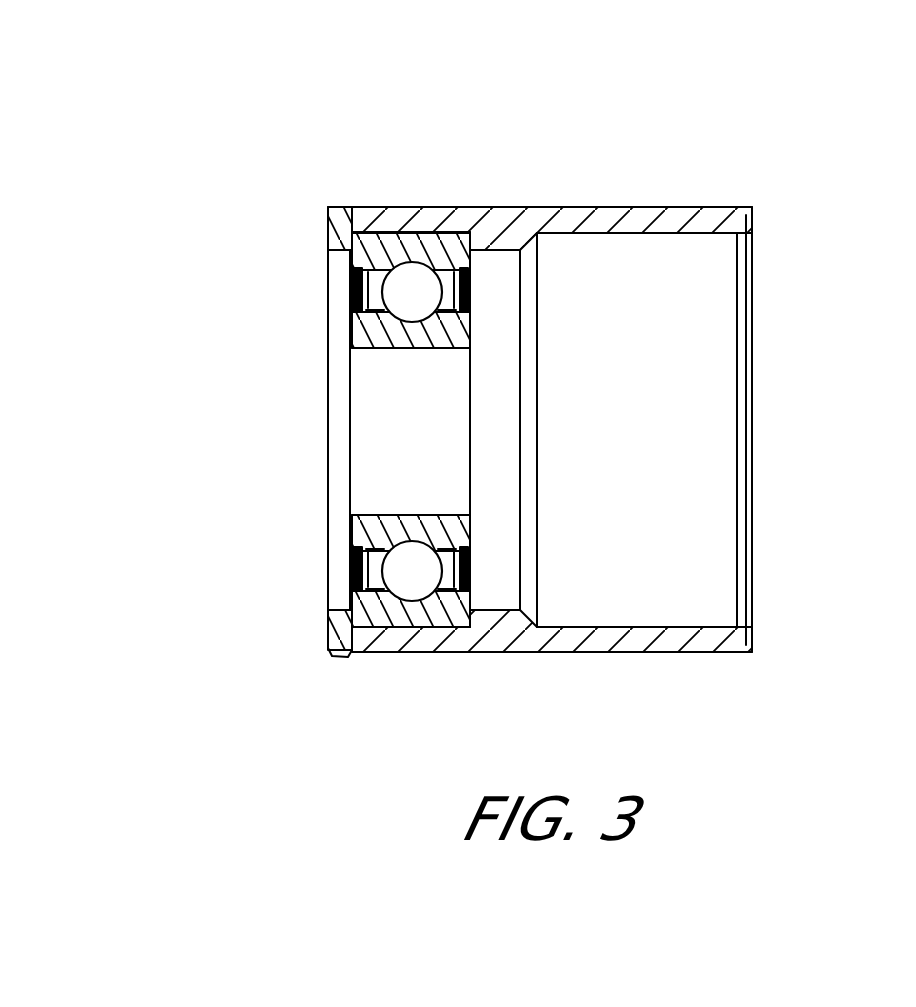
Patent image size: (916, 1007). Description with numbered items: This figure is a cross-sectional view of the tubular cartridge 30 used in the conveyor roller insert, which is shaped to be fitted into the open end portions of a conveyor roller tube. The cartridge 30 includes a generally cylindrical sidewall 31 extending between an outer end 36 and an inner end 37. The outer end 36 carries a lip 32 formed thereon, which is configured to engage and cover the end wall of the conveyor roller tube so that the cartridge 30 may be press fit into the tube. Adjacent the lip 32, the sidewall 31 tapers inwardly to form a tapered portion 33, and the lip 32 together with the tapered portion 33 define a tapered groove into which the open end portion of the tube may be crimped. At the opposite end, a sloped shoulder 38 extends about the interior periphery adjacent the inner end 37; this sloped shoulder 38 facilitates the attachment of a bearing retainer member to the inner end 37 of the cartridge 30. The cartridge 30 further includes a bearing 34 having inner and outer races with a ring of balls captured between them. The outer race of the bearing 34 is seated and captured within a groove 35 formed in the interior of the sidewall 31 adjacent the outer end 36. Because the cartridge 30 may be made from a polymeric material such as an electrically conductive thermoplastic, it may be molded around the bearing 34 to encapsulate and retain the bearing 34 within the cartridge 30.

The cartridge 30 is at (290, 700).
The sidewall 31 is at (508, 207).
The lip 32 is at (363, 212).
The tapered portion 33 is at (436, 196).
The bearing 34 is at (313, 666).
The groove 35 is at (453, 627).
The outer end 36 is at (330, 210).
The inner end 37 is at (752, 213).
The sloped shoulder 38 is at (738, 278).